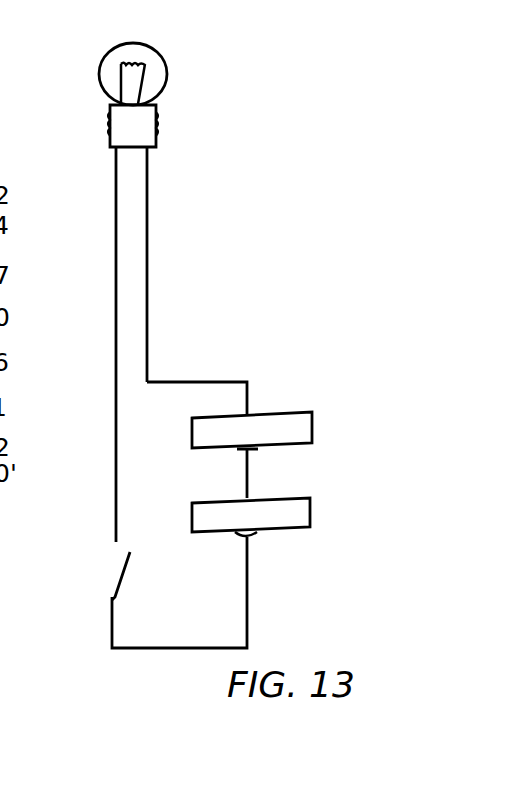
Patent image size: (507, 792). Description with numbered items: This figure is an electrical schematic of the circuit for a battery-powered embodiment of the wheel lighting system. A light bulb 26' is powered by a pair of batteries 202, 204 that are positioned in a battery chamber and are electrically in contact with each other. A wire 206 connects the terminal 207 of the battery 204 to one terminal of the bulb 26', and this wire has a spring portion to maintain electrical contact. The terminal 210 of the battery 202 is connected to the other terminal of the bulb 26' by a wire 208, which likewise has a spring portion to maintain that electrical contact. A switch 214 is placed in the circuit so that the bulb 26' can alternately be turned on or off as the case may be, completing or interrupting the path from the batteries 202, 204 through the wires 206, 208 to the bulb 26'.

The light bulb 26' is at (214, 82).
The wire 208 is at (113, 368).
The wire 206 is at (195, 380).
The terminal 207 is at (272, 412).
The battery 204 is at (312, 427).
The battery 202 is at (310, 512).
The terminal 210 is at (255, 537).
The switch 214 is at (118, 578).